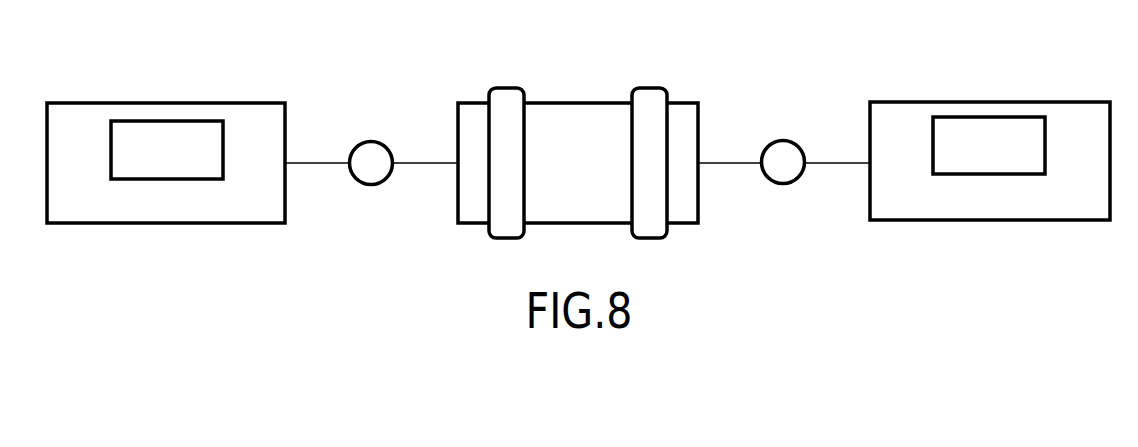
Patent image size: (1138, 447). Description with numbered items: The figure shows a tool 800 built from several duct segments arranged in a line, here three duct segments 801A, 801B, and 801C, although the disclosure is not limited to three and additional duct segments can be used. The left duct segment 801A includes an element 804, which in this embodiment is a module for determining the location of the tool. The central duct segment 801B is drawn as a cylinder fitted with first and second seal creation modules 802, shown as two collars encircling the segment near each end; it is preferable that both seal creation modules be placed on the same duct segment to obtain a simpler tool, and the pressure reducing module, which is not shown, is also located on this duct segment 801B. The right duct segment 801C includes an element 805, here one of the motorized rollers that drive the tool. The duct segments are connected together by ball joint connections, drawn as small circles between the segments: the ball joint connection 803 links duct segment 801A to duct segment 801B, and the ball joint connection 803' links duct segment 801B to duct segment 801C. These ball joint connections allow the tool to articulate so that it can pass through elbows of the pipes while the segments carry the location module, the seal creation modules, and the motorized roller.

The tool 800 is at (290, 72).
The duct segment 801A is at (142, 217).
The duct segment 801B is at (552, 214).
The duct segment 801C is at (961, 212).
The seal creation modules 802 is at (507, 108).
The ball joint connection 803 is at (371, 138).
The ball joint connection 803' is at (786, 137).
The module for determining the location of the tool 804 is at (148, 162).
The motorized roller 805 is at (969, 157).